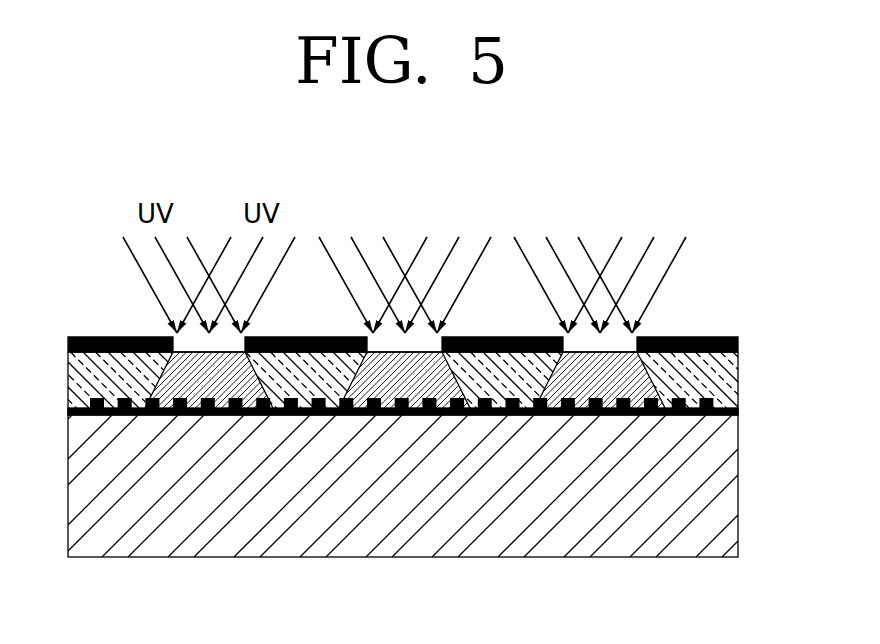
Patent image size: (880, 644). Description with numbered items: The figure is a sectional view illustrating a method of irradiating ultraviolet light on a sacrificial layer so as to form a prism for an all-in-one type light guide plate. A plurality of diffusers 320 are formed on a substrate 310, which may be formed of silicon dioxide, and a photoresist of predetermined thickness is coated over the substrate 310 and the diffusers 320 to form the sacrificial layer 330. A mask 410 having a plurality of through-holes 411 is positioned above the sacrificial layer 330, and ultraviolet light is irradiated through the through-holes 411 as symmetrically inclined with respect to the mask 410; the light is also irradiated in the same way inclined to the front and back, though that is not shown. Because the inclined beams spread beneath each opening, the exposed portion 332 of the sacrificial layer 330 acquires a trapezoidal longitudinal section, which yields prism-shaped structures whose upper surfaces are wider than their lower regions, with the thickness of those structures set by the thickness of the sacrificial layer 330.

The substrate 310 is at (732, 485).
The diffusers 320 is at (718, 409).
The sacrificial layer 330 is at (738, 375).
The exposed portion 332 is at (402, 380).
The mask 410 is at (738, 345).
The through-holes 411 is at (245, 337).